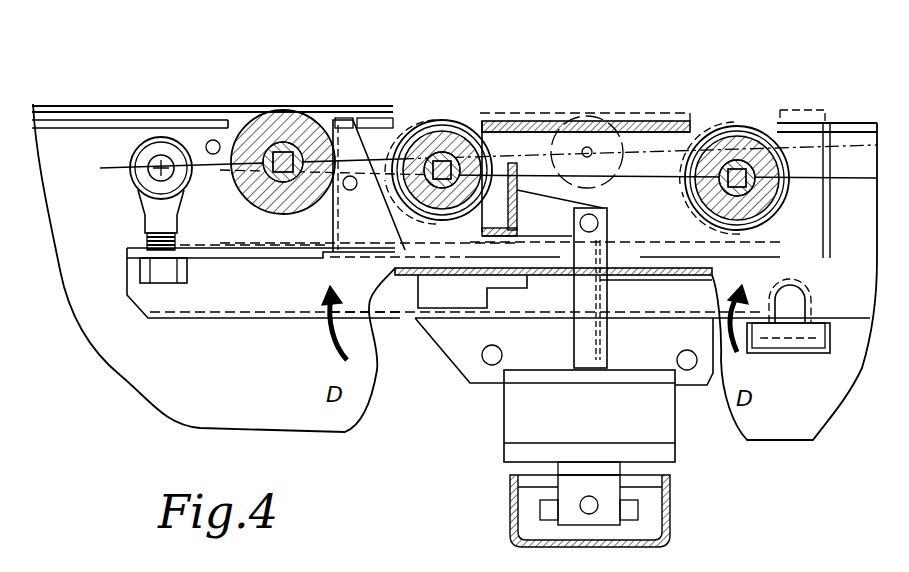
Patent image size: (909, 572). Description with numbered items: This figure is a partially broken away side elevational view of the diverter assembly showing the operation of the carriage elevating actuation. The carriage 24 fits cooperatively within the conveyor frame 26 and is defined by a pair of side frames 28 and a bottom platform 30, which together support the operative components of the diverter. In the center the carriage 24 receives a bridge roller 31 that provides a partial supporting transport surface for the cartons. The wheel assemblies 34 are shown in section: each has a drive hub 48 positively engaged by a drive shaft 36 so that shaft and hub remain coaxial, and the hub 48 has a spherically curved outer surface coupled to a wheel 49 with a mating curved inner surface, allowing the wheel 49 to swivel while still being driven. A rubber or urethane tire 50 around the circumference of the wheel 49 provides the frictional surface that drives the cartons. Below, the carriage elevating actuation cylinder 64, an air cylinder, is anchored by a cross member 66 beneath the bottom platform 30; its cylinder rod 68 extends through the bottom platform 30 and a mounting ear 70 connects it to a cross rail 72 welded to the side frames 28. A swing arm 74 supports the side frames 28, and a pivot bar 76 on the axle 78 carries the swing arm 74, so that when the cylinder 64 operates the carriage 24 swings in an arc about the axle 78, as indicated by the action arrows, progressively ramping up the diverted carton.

The carriage 24 is at (520, 103).
The conveyor frame 26 is at (135, 358).
The side frames 28 is at (505, 125).
The bottom platform 30 is at (652, 267).
The bridge roller 31 is at (581, 140).
The wheel assembly 34 is at (441, 108).
The drive shaft 36 is at (412, 188).
The drive hub 48 is at (428, 116).
The wheel 49 is at (722, 115).
The tire 50 is at (743, 112).
The carriage elevating actuation cylinder 64 is at (537, 412).
The actuator base 66 is at (540, 537).
The cylinder rod 68 is at (578, 342).
The post 70 is at (556, 230).
The cross rail 72 is at (494, 264).
The swing arm 74 is at (253, 290).
The pivot bar 76 is at (150, 210).
The axle 78 is at (150, 168).